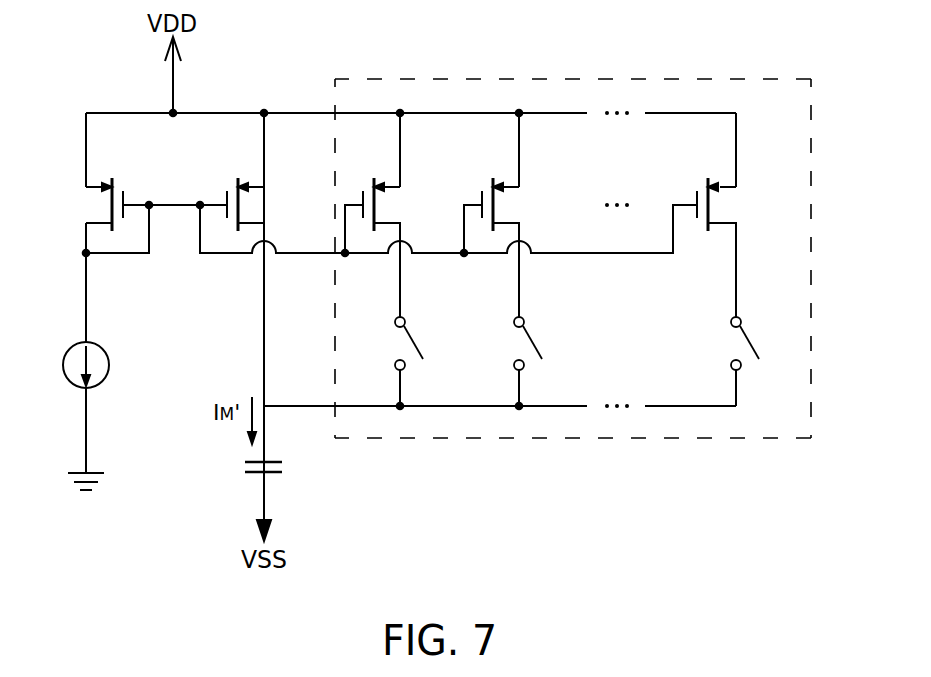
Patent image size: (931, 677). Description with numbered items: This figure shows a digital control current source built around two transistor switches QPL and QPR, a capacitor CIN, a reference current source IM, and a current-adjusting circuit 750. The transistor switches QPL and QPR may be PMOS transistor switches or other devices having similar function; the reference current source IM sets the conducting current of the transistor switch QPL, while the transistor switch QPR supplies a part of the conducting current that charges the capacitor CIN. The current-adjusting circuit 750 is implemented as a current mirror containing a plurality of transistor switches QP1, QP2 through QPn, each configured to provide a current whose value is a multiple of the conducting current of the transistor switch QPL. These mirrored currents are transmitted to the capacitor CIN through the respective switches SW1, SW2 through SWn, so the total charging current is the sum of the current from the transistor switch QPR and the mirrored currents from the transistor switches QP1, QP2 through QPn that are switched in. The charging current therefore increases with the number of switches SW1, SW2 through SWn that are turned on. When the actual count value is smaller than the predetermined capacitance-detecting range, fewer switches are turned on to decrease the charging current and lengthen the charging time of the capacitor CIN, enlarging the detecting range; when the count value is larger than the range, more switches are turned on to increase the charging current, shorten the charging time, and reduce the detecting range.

The current-adjusting circuit 750 is at (573, 79).
The transistor switch QPL is at (79, 204).
The transistor switch QPR is at (273, 203).
The transistor switch QP1 is at (398, 244).
The transistor switch QP2 is at (518, 244).
The transistor switch QPn is at (740, 247).
The switch SW1 is at (383, 361).
The switch SW2 is at (501, 361).
The switch SWn is at (717, 361).
The capacitor CIN is at (282, 467).
The reference current source IM is at (69, 365).